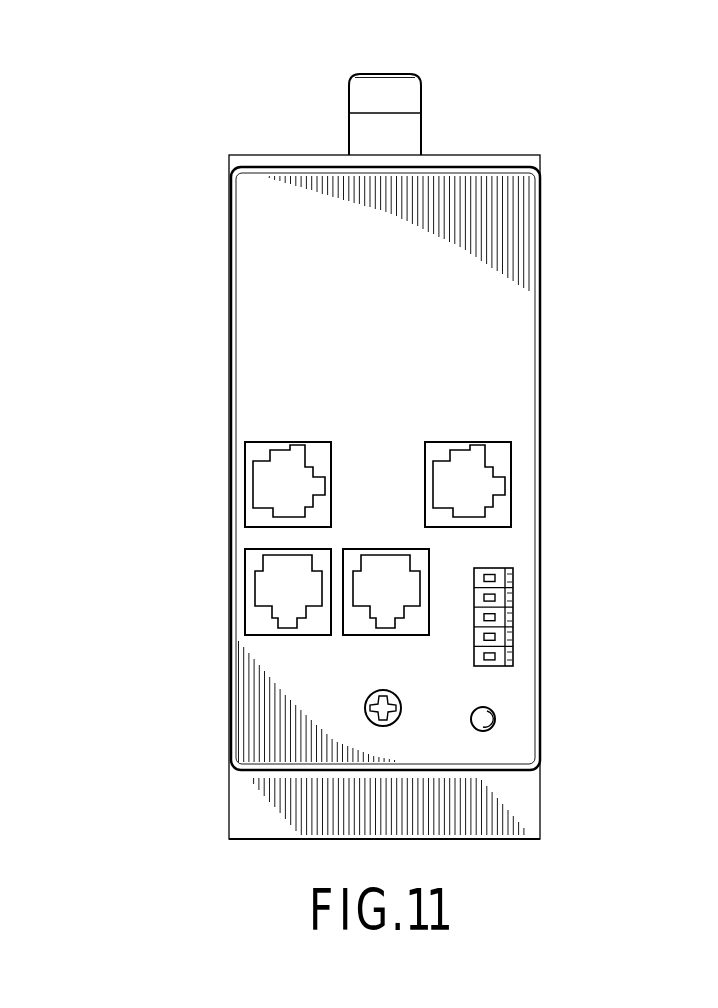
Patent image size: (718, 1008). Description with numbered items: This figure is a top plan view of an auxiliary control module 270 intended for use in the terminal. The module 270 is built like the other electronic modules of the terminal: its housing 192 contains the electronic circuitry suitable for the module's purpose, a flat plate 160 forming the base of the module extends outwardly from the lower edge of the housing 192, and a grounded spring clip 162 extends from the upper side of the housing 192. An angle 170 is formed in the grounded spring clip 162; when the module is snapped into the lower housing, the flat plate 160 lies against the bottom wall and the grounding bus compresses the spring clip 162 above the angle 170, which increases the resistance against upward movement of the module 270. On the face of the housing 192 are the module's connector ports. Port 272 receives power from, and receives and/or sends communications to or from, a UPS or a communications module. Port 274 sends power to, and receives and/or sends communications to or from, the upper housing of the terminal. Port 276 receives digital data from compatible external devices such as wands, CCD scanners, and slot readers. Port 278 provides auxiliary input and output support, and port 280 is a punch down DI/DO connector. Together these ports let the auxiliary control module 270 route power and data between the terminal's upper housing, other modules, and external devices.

The flat plate 160 is at (523, 801).
The grounded spring clip 162 is at (407, 130).
The angle 170 is at (371, 113).
The housing 192 is at (283, 365).
The auxiliary control module 270 is at (589, 191).
The port 272 is at (480, 482).
The port 274 is at (267, 483).
The port 276 is at (267, 592).
The port 278 is at (397, 568).
The punch down DI/DO connector 280 is at (498, 637).